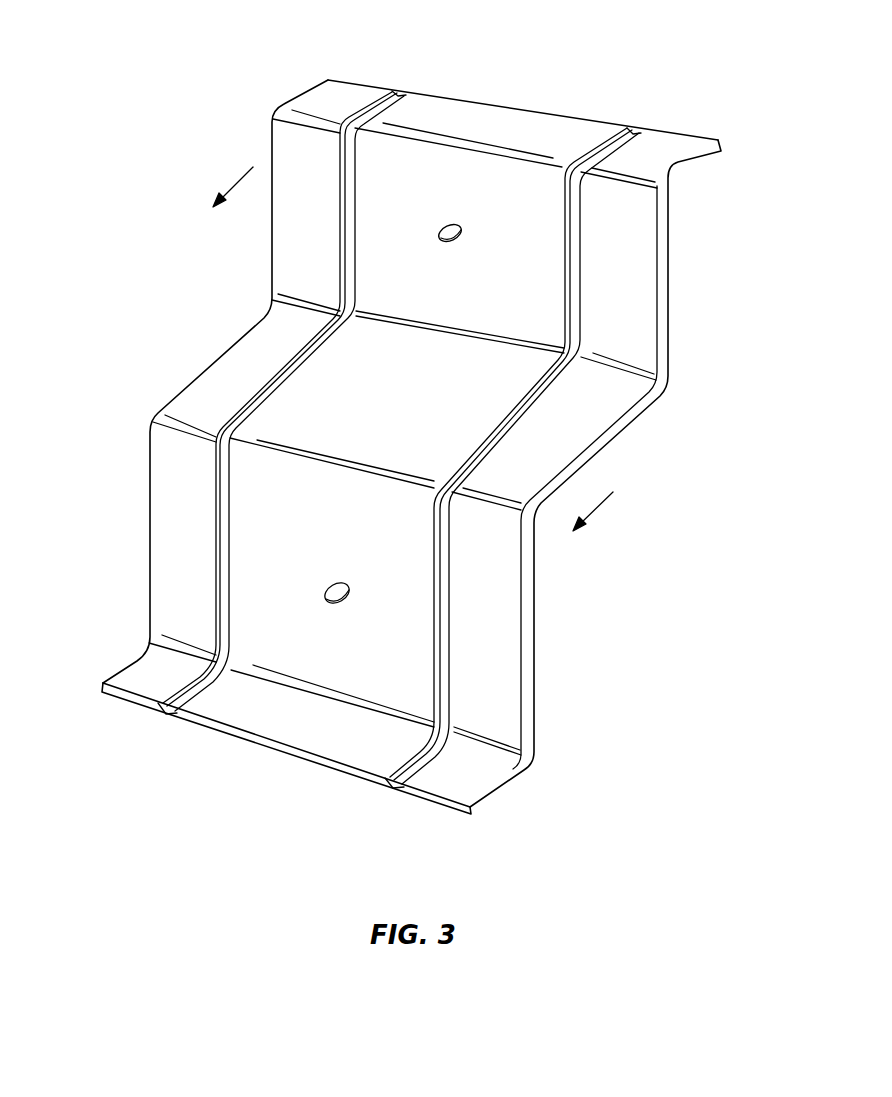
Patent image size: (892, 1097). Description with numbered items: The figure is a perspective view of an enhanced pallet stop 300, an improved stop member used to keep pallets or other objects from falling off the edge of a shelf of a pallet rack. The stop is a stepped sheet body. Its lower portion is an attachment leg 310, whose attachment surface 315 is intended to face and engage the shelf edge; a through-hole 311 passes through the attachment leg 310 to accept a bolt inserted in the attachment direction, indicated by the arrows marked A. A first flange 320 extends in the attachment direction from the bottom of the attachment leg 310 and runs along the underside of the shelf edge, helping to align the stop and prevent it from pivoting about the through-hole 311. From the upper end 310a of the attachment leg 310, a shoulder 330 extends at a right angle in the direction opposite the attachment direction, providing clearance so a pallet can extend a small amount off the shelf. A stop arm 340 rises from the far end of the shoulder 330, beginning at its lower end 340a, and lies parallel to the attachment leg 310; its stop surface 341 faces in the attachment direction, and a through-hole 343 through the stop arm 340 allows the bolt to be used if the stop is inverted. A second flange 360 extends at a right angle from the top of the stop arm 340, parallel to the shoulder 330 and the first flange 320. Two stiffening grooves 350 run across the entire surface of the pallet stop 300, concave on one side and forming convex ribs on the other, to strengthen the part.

The enhanced pallet stop 300 is at (210, 125).
The attachment leg 310 is at (150, 575).
The upper end of attachment leg 310a is at (273, 450).
The through-hole 311 is at (345, 583).
The attachment surface 315 is at (182, 502).
The first flange 320 is at (275, 746).
The shoulder 330 is at (231, 342).
The stop arm 340 is at (668, 256).
The lower end of stop arm 340a is at (668, 376).
The stop surface 341 is at (638, 276).
The through-hole 343 is at (460, 230).
The stiffening grooves 350 is at (399, 90).
The second flange 360 is at (500, 107).